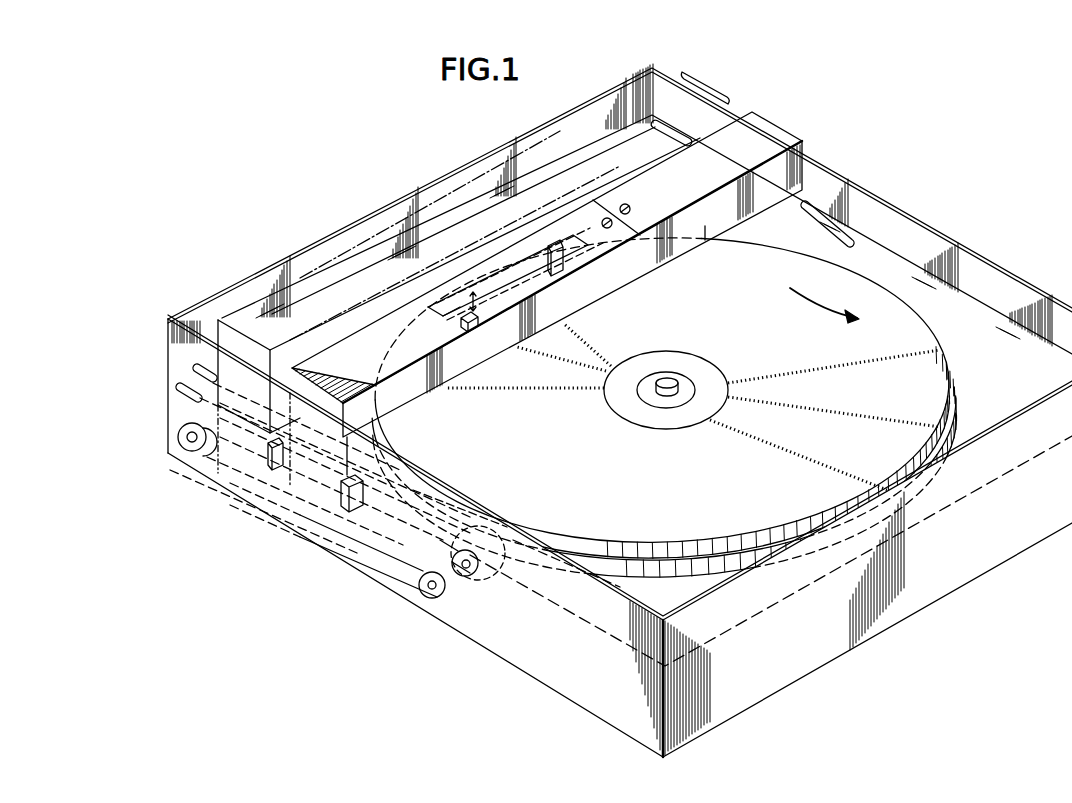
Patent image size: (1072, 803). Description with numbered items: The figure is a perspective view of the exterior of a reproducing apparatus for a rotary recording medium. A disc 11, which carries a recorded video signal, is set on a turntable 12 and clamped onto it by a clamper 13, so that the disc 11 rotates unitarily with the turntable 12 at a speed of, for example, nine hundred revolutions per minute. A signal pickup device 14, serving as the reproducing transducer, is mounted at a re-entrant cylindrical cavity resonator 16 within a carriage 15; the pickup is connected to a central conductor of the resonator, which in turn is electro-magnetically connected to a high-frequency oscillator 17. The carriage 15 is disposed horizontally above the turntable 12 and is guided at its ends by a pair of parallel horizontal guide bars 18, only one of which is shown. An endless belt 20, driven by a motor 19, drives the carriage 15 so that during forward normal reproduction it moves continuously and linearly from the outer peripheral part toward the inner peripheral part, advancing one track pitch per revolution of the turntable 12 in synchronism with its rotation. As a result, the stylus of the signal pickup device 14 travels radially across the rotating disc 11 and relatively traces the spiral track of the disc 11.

The disc 11 is at (938, 377).
The turntable 12 is at (638, 568).
The clamper 13 is at (658, 402).
The signal pickup device 14 is at (512, 310).
The carriage 15 is at (457, 195).
The re-entrant cylindrical cavity resonator 16 is at (593, 295).
The high-frequency oscillator 17 is at (706, 243).
The guide bars 18 is at (342, 555).
The motor 19 is at (511, 577).
The endless belt 20 is at (390, 562).